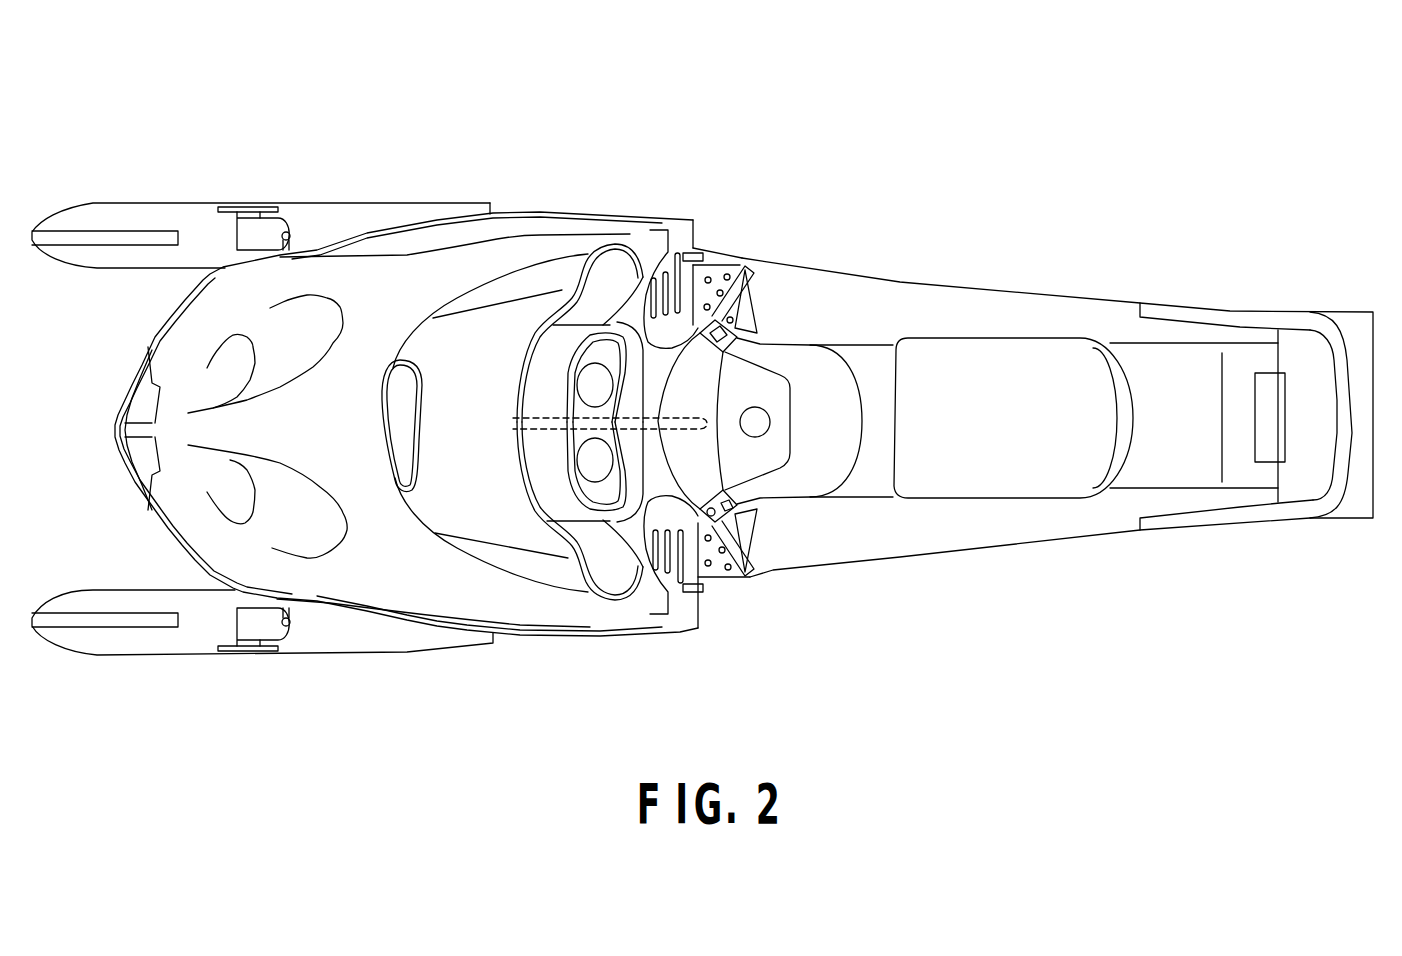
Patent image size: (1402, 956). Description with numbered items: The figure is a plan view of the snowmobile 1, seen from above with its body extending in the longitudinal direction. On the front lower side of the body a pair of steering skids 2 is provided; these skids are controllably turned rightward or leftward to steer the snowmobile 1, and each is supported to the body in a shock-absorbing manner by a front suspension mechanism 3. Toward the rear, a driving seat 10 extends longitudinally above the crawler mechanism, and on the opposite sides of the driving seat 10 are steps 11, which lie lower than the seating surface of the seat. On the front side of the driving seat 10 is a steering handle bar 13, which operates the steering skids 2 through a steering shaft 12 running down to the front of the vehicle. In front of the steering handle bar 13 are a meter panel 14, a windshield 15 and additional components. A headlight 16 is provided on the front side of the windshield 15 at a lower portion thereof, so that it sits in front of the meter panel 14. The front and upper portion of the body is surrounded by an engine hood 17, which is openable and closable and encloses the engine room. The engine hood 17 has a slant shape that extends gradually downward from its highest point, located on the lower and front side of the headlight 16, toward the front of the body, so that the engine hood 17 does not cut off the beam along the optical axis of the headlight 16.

The snowmobile 1 is at (778, 152).
The steering skids 2 is at (123, 215).
The front suspension mechanism 3 is at (252, 233).
The driving seat 10 is at (1013, 482).
The steps 11 is at (1000, 297).
The steering shaft 12 is at (542, 418).
The steering handle bar 13 is at (747, 577).
The meter panel 14 is at (610, 507).
The windshield 15 is at (477, 357).
The headlight 16 is at (410, 472).
The engine hood 17 is at (360, 283).